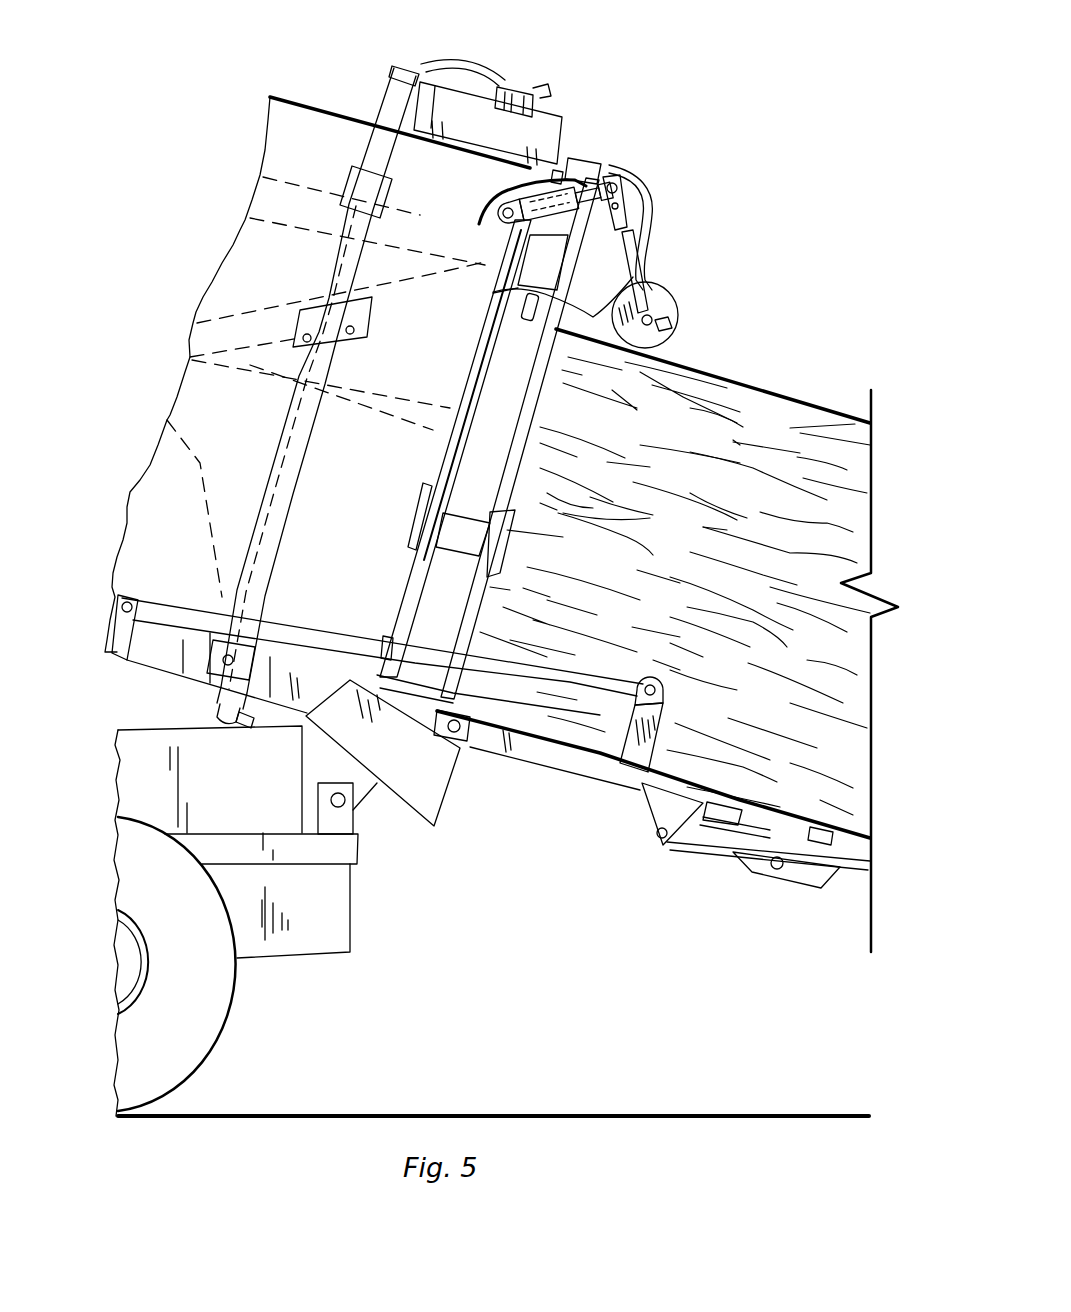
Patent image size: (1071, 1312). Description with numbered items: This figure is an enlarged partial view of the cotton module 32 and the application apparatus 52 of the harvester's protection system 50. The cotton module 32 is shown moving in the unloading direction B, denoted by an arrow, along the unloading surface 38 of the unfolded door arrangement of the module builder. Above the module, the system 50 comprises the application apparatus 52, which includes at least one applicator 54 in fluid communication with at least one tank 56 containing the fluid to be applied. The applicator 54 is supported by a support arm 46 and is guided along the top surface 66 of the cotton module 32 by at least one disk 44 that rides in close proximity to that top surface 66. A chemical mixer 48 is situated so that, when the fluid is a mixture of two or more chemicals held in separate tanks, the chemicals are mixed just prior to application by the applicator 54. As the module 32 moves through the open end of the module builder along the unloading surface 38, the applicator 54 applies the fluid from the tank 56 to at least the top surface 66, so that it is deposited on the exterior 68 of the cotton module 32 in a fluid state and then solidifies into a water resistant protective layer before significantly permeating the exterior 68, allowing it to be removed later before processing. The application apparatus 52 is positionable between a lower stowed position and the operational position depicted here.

The cotton module 32 is at (808, 447).
The unloading surface 38 is at (553, 752).
The disk 44 is at (673, 298).
The support arm 46 is at (558, 330).
The chemical mixer 48 is at (591, 157).
The system 50 is at (690, 134).
The application apparatus 52 is at (690, 213).
The applicator 54 is at (670, 326).
The tank 56 is at (557, 116).
The top surface 66 is at (782, 392).
The exterior 68 is at (771, 358).
The unloading direction B is at (573, 864).